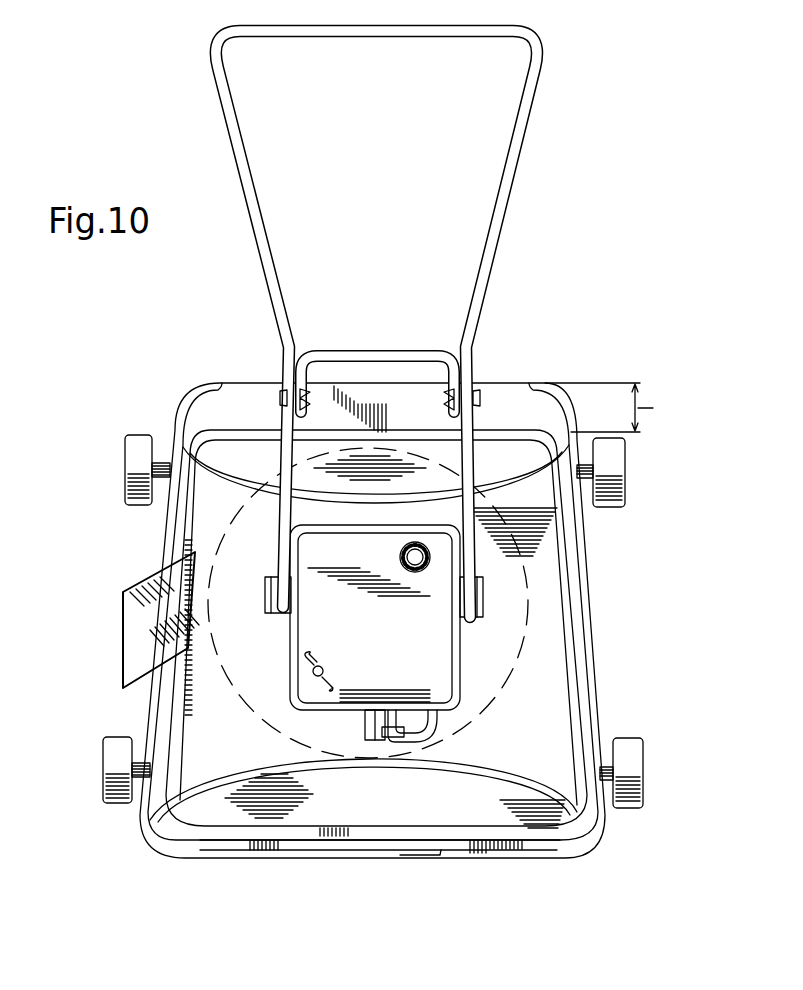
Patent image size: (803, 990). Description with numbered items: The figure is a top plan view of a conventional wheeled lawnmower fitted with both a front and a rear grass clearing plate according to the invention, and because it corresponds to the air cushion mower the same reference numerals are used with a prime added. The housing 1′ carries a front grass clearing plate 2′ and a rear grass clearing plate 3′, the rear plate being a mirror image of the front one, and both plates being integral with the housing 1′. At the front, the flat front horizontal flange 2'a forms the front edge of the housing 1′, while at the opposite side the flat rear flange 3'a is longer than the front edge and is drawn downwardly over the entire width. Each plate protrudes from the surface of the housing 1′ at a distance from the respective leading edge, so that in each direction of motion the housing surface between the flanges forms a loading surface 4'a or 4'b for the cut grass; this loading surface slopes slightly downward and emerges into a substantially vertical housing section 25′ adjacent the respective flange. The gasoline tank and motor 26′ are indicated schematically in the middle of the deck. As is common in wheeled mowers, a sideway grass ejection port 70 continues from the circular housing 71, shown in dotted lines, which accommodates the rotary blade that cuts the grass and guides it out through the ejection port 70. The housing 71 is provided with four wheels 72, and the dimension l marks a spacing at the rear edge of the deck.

The housing 1′ is at (168, 529).
The front grass clearing plate 2′ is at (230, 776).
The front horizontal flange 2'a is at (380, 870).
The rear grass clearing plate 3′ is at (490, 494).
The rear flange 3'a is at (487, 378).
The loading surface 4'a is at (451, 856).
The loading surface 4'b is at (349, 425).
The vertical housing section 25′ is at (503, 437).
The gasoline tank and motor 26′ is at (420, 650).
The sideway grass ejection port 70 is at (133, 655).
The circular housing 71 is at (527, 587).
The wheels 72 is at (125, 470).
The offset distance l is at (648, 407).